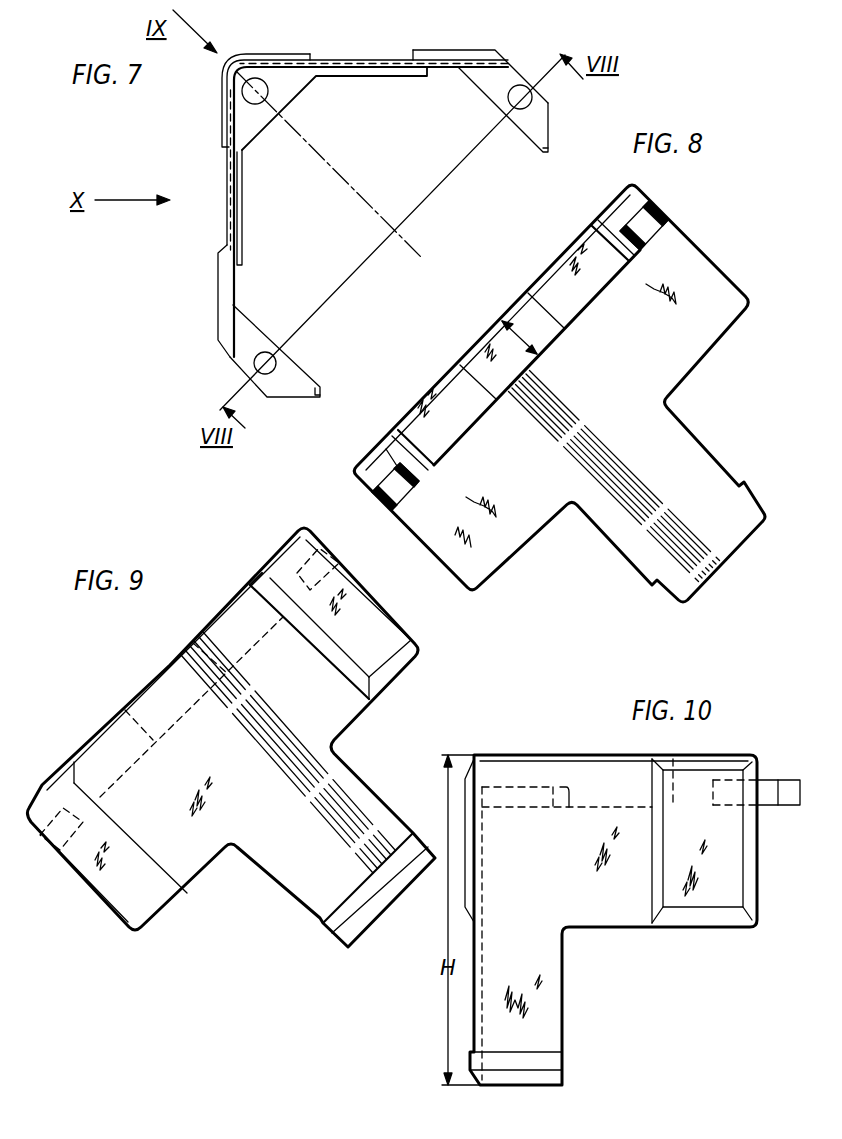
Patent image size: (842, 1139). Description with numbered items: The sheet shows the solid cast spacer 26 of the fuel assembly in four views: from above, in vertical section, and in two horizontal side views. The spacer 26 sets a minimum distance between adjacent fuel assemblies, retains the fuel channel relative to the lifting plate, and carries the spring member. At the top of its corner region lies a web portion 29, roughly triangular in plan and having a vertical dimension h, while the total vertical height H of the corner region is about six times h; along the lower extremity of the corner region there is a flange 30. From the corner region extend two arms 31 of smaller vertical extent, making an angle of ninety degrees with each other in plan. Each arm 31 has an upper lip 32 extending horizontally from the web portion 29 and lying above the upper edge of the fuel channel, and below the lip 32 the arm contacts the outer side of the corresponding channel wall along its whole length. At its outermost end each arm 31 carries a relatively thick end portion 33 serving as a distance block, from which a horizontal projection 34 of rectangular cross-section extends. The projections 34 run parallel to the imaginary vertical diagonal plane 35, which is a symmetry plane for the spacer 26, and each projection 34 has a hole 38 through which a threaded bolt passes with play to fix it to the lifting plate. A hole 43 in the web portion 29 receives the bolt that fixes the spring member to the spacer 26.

In FIG. 7, the spacer 26 is at (196, 270).
In FIG. 8, the spacer 26 is at (708, 403).
In FIG. 9, the spacer 26 is at (229, 903).
In FIG. 10, the spacer 26 is at (611, 968).
In FIG. 7, the web portion 29 is at (292, 86).
In FIG. 8, the web portion 29 is at (513, 370).
In FIG. 7, the flange 30 is at (220, 107).
In FIG. 9, the flange 30 is at (340, 924).
In FIG. 10, the flange 30 is at (557, 1060).
In FIG. 7, the arm 31 is at (362, 59).
In FIG. 7, the upper lip 32 is at (381, 72).
In FIG. 8, the upper lip 32 is at (596, 284).
In FIG. 7, the end portion 33 is at (465, 51).
In FIG. 9, the end portion 33 is at (371, 616).
In FIG. 10, the end portion 33 is at (466, 777).
In FIG. 7, the projection 34 is at (550, 118).
In FIG. 8, the projection 34 is at (660, 210).
In FIG. 10, the projection 34 is at (790, 783).
In FIG. 7, the imaginary vertical diagonal plane 35 is at (340, 176).
In FIG. 7, the hole 38 is at (518, 108).
In FIG. 7, the hole 43 is at (256, 100).